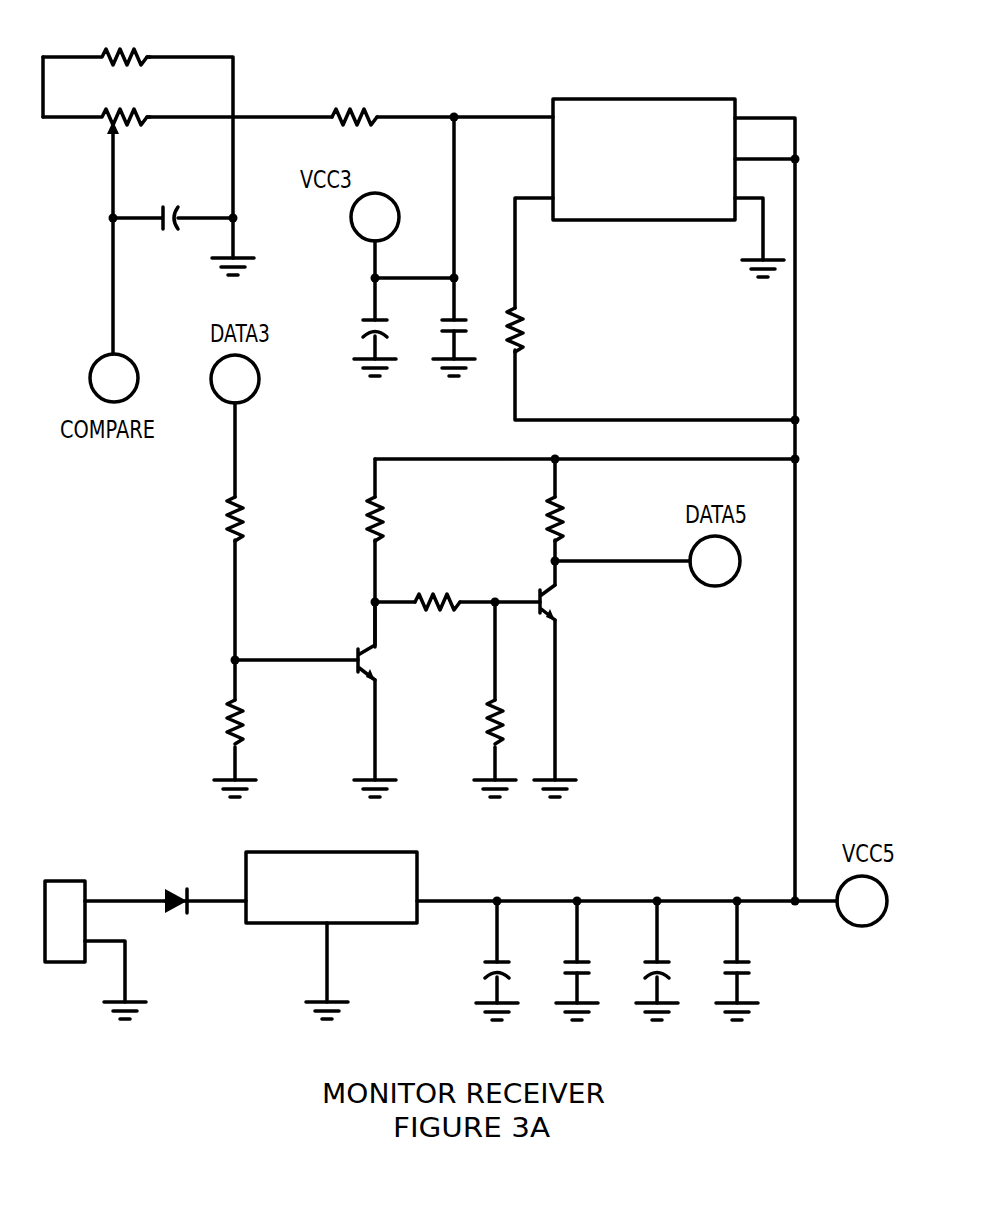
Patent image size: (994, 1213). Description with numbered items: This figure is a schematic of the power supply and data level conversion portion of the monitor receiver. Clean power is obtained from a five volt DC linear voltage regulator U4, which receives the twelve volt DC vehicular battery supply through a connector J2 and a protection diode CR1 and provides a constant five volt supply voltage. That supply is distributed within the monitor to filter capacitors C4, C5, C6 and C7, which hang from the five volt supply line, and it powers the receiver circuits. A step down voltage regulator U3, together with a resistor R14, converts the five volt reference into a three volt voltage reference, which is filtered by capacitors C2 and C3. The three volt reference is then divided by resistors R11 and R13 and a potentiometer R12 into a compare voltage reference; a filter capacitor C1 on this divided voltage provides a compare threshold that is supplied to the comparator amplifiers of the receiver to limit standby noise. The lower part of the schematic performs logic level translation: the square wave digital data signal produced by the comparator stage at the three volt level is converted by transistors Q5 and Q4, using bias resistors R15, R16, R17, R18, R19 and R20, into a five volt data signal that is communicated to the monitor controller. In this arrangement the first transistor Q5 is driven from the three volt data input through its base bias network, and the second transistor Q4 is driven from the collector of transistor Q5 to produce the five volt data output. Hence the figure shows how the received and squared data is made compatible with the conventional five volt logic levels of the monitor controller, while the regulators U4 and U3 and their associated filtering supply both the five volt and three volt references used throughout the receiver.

The resistor R11 is at (96, 38).
The potentiometer R12 is at (96, 100).
The resistor R13 is at (354, 100).
The resistor R14 is at (541, 330).
The bias resistor R15 is at (261, 519).
The bias resistor R16 is at (402, 519).
The bias resistor R17 is at (530, 519).
The bias resistor R18 is at (437, 582).
The bias resistor R19 is at (209, 720).
The bias resistor R20 is at (470, 720).
The filter capacitor C1 is at (173, 201).
The capacitor C2 is at (357, 323).
The capacitor C3 is at (436, 323).
The filter capacitor C4 is at (478, 958).
The filter capacitor C5 is at (558, 956).
The filter capacitor C6 is at (638, 958).
The filter capacitor C7 is at (718, 956).
The step down voltage regulator U3 is at (644, 142).
The five volt DC linear voltage regulator U4 is at (331, 869).
The connector J2 is at (65, 906).
The protection diode CR1 is at (176, 886).
The transistor Q4 is at (566, 605).
The transistor Q5 is at (346, 641).